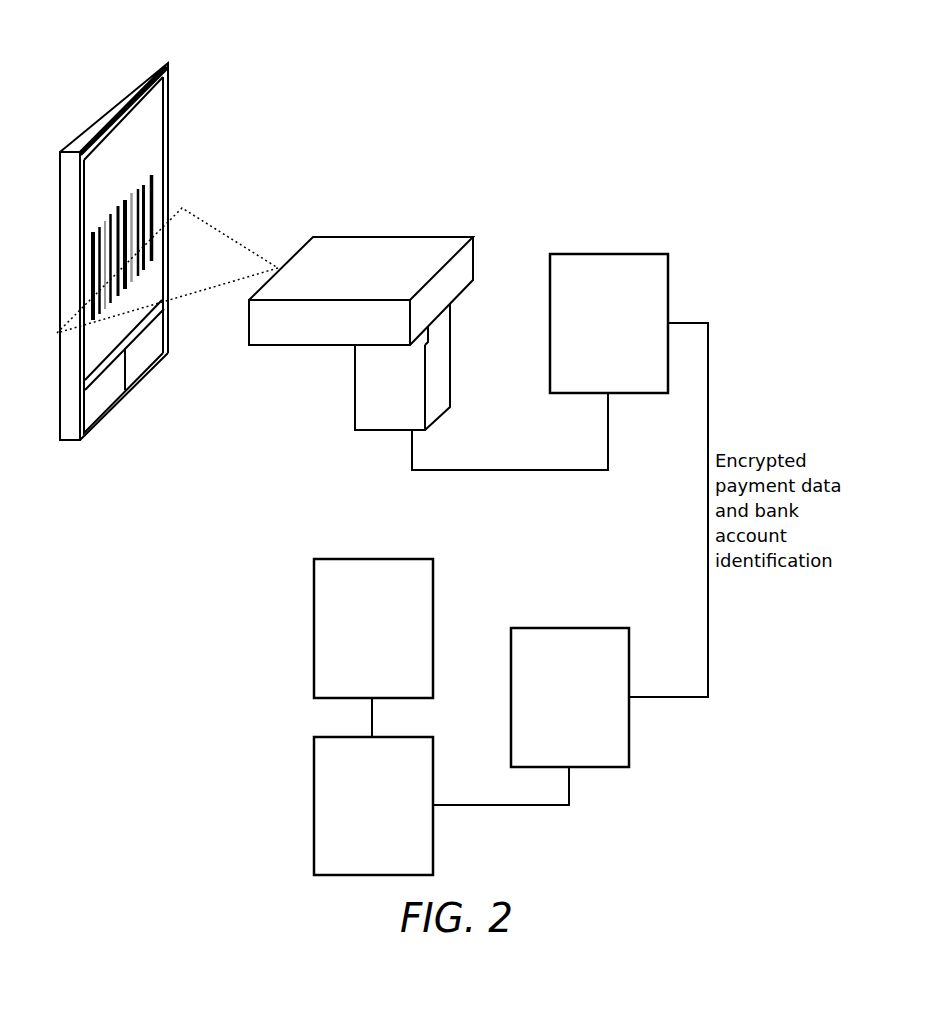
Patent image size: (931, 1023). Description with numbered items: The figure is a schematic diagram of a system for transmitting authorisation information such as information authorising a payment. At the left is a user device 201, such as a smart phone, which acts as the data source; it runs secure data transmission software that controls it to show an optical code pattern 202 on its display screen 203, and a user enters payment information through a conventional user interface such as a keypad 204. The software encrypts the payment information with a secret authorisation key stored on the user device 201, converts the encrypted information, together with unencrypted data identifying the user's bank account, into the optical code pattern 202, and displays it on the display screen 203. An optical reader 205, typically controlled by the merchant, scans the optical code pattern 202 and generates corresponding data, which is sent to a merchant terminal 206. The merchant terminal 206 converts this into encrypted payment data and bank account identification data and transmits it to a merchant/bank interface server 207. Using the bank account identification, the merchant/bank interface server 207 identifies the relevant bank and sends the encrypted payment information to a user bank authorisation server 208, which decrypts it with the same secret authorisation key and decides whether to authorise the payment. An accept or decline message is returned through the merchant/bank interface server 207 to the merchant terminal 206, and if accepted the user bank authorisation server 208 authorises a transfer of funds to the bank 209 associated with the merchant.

The user device 201 is at (152, 63).
The optical code pattern 202 is at (154, 176).
The display screen 203 is at (166, 108).
The keypad 204 is at (147, 353).
The optical reader 205 is at (445, 237).
The merchant terminal 206 is at (641, 254).
The merchant/bank interface server 207 is at (601, 628).
The user bank authorisation server 208 is at (313, 748).
The bank associated with the merchant 209 is at (313, 570).